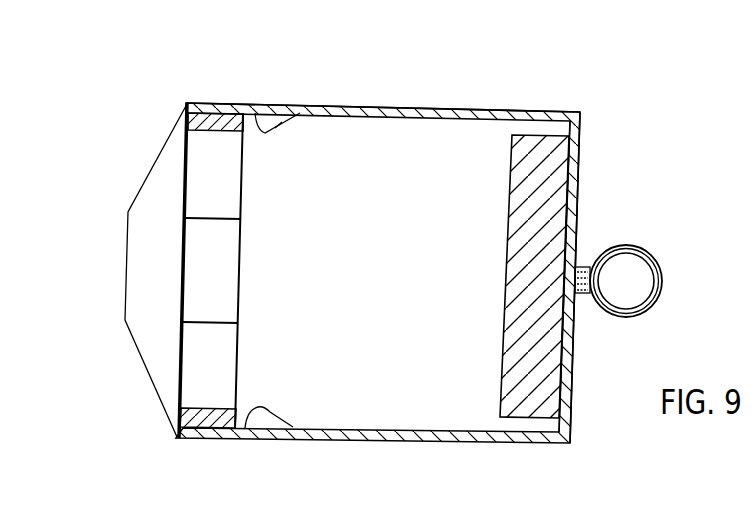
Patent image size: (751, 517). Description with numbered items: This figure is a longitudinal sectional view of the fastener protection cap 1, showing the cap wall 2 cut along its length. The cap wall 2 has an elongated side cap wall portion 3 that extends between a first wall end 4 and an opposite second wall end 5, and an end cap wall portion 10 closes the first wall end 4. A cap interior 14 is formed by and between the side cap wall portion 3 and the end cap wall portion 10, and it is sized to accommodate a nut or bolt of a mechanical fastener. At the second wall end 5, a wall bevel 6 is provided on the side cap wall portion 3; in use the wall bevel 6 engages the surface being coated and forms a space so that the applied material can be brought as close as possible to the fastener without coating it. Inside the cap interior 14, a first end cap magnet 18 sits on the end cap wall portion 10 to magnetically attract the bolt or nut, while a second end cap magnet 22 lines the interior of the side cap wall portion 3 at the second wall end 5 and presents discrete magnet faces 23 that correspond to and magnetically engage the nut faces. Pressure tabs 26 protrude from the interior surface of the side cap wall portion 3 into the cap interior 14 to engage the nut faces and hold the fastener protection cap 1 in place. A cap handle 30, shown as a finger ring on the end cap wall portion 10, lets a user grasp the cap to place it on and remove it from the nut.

The fastener protection cap 1 is at (158, 54).
The cap wall 2 is at (401, 101).
The side cap wall portion 3 is at (453, 111).
The first wall end 4 is at (577, 108).
The second wall end 5 is at (186, 104).
The wall bevel 6 is at (127, 267).
The end cap wall portion 10 is at (579, 153).
The cap interior 14 is at (334, 154).
The first end cap magnet 18 is at (510, 259).
The second end cap magnet 22 is at (247, 267).
The magnet faces 23 is at (232, 190).
The pressure tab 26 is at (266, 135).
The cap handle 30 is at (662, 276).